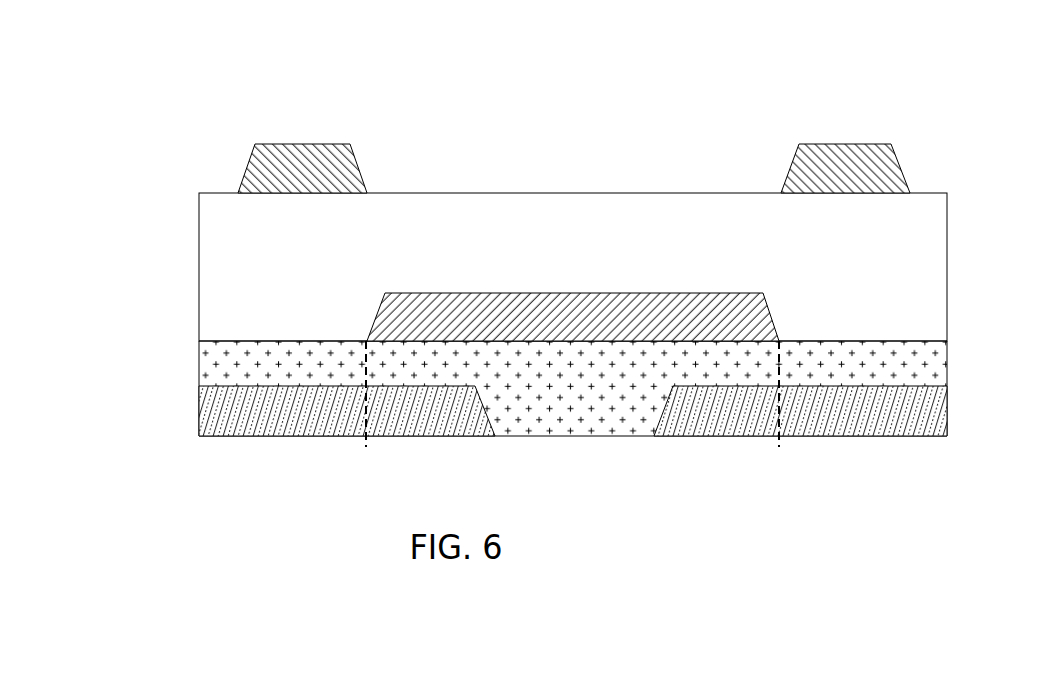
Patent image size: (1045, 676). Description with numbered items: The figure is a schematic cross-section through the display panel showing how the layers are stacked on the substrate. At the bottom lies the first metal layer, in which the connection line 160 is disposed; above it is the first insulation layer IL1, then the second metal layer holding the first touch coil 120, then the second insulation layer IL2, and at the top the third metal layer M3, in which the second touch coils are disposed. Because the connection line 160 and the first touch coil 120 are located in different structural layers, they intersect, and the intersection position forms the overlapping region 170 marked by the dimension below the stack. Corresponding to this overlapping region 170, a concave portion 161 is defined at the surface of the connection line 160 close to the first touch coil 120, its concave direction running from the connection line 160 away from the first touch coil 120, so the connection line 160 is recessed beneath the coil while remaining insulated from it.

The third metal layer M3 is at (252, 169).
The second insulation layer IL2 is at (205, 247).
The first touch coil 120 is at (384, 311).
The first insulation layer IL1 is at (205, 357).
The connection line 160 is at (205, 407).
The concave portion 161 is at (558, 396).
The overlapping region 170 is at (378, 457).